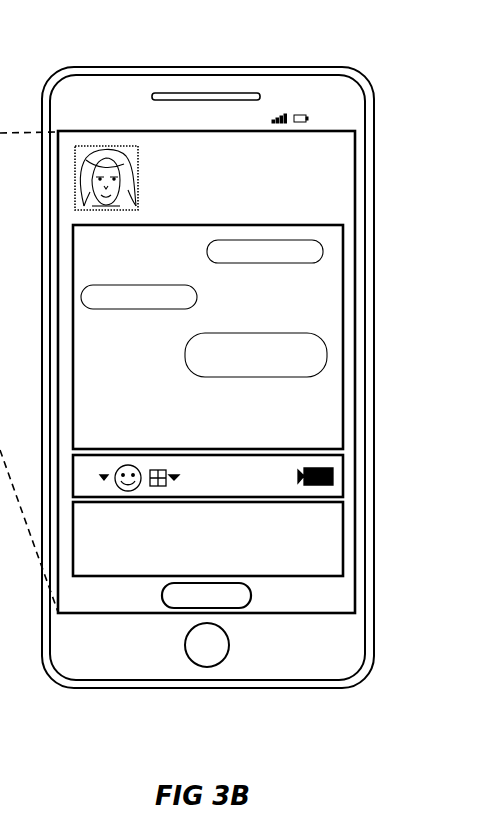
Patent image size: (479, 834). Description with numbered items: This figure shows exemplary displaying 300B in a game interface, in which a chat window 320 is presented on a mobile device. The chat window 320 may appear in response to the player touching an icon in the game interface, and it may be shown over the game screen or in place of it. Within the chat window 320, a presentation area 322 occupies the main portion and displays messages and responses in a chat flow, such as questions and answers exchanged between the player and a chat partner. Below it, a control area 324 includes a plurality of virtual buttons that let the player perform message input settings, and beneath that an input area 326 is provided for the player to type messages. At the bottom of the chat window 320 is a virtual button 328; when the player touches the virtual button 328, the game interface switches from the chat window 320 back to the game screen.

The exemplary displaying 300B is at (243, 42).
The chat window 320 is at (337, 178).
The presentation area 322 is at (342, 337).
The control area 324 is at (343, 473).
The input area 326 is at (343, 537).
The virtual button 328 is at (251, 595).